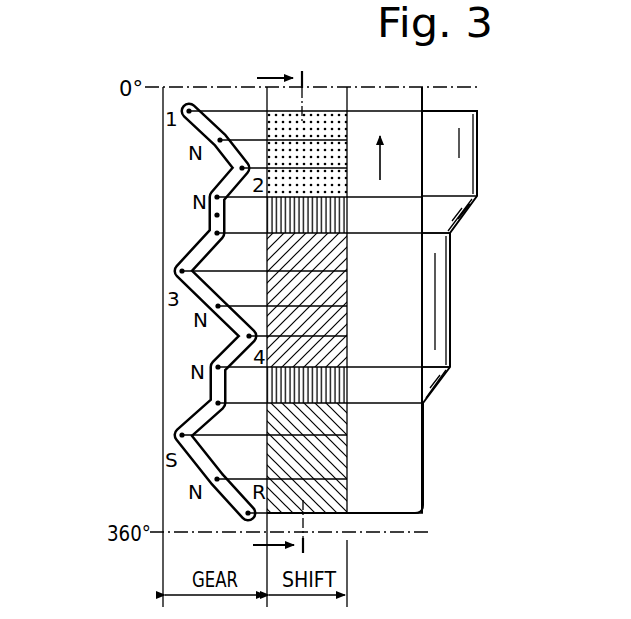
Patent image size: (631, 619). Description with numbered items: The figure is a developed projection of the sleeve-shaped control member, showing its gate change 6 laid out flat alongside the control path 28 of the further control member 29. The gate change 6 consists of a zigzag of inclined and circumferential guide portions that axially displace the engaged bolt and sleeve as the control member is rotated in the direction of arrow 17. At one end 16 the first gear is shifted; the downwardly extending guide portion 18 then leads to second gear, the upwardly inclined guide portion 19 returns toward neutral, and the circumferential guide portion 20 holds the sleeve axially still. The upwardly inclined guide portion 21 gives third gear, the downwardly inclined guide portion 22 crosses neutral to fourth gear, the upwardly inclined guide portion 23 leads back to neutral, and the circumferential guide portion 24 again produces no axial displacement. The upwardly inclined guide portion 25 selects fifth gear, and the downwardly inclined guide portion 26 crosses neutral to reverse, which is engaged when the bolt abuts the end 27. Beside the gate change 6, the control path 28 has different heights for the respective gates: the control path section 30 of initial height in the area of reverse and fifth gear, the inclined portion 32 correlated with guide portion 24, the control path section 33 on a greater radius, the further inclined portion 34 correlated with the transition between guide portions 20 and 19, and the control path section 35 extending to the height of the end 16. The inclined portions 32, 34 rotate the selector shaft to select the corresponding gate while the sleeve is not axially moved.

The gate change 6 is at (203, 297).
The end of the gate change 16 is at (185, 98).
The arrow of rotational direction 17 is at (396, 158).
The downwardly extending guide portion 18 is at (208, 127).
The upwardly inclined guide portion 19 is at (203, 208).
The circumferential guide portion 20 is at (211, 222).
The upwardly inclined guide portion 21 is at (203, 244).
The downwardly inclined guide portion 22 is at (200, 320).
The upwardly inclined guide portion 23 is at (207, 378).
The circumferential guide portion 24 is at (209, 395).
The upwardly inclined guide portion 25 is at (204, 410).
The downwardly inclined guide portion 26 is at (194, 461).
The end of the guide portion 27 is at (243, 518).
The control path 28 is at (412, 299).
The further control member 29 is at (338, 461).
The control path section 30 is at (423, 458).
The inclined portion 32 is at (437, 388).
The control path section 33 is at (452, 302).
The inclined portion 34 is at (462, 222).
The control path section 35 is at (478, 168).